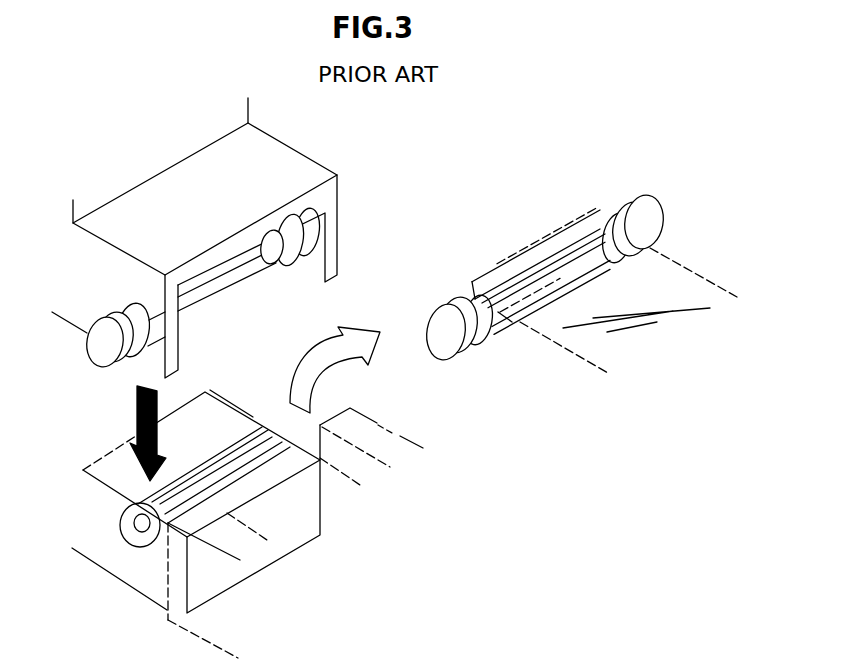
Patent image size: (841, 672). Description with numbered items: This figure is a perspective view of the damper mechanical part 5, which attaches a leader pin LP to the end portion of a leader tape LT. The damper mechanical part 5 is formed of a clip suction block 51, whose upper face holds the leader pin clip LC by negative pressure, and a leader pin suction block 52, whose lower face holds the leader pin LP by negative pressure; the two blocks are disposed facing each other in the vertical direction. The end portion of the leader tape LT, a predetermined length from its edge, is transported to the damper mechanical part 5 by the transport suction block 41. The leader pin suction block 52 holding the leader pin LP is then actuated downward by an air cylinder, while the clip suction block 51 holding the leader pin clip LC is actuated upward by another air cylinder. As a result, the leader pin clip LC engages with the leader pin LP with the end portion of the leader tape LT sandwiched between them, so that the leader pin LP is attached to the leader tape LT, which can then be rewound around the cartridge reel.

The damper mechanical part 5 is at (241, 238).
The leader pin suction block 52 is at (270, 176).
The clip suction block 51 is at (140, 562).
The transport suction block 41 is at (383, 445).
The leader pin LP is at (103, 345).
The leader pin clip LC is at (145, 525).
The leader tape LT is at (113, 470).